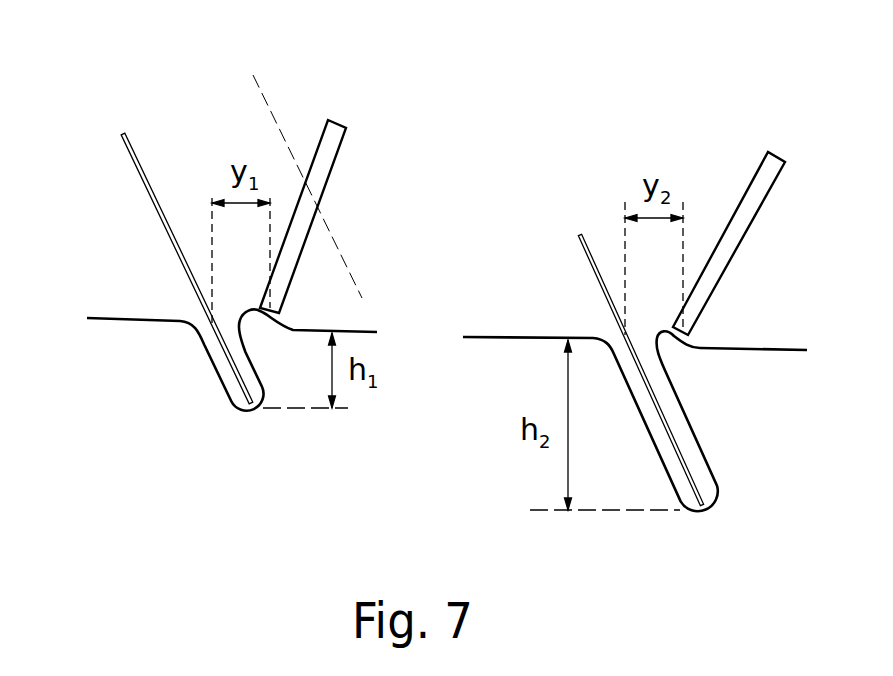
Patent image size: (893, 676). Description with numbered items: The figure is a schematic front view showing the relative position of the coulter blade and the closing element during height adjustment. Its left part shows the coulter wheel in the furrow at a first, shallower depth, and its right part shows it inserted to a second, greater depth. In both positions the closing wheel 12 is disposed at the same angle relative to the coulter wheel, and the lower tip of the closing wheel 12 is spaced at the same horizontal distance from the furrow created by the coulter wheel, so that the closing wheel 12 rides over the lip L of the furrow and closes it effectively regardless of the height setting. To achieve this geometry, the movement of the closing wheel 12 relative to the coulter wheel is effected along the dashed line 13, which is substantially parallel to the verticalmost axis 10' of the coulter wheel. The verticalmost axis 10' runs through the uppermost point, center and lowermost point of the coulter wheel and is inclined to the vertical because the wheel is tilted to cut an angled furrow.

The verticalmost axis of the coulter wheel 10' is at (378, 319).
The closing wheel 12 is at (331, 172).
The dashed line 13 is at (262, 92).
The lip of the furrow L is at (241, 322).